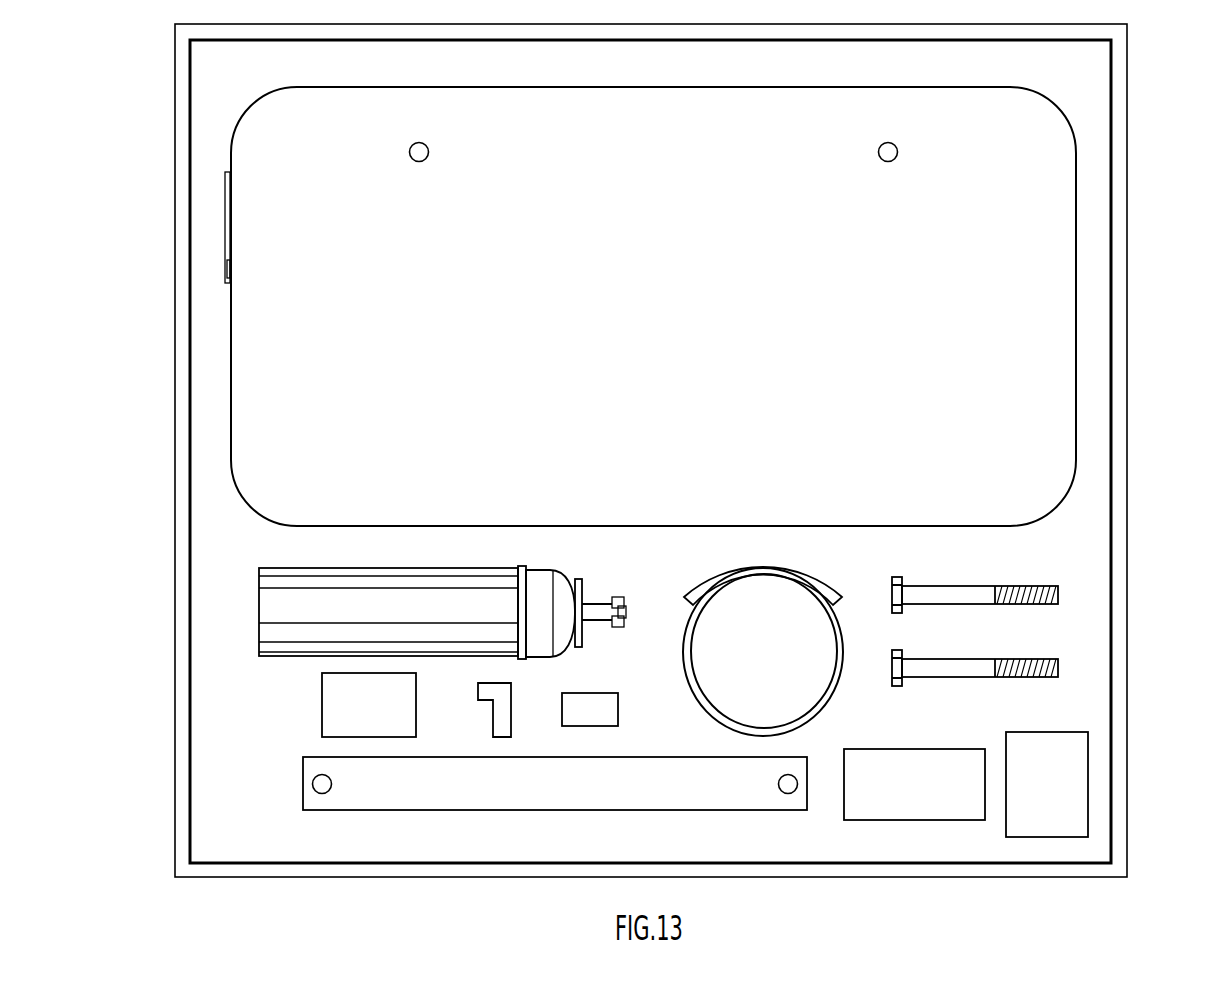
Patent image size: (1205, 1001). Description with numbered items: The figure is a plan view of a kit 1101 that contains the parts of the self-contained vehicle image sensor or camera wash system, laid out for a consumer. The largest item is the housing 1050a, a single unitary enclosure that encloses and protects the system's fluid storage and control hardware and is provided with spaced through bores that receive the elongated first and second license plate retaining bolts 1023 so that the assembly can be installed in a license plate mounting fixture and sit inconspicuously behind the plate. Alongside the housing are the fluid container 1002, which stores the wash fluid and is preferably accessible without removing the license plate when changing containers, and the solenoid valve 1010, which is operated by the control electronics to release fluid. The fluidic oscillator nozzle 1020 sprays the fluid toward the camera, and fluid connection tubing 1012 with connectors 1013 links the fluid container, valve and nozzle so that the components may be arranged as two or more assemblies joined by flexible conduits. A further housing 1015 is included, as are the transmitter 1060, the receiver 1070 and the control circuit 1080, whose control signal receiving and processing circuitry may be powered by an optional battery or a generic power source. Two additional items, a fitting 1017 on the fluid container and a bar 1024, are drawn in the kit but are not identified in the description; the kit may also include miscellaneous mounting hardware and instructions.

The kit 1101 is at (1127, 142).
The housing or enclosure 1050a is at (1076, 360).
The housing 1015 is at (226, 215).
The fluid container 1002 is at (390, 595).
The cylinder valve fitting 1017 is at (617, 597).
The fluid connection tubing 1012 is at (822, 587).
The license plate retaining bolts 1023 is at (986, 656).
The receiver 1070 is at (313, 705).
The control circuit 1080 is at (322, 707).
The connectors 1013 is at (478, 690).
The fluidic oscillator nozzle 1020 is at (618, 709).
The mounting bar 1024 is at (545, 811).
The solenoid valve 1010 is at (916, 749).
The transmitter 1060 is at (1027, 732).